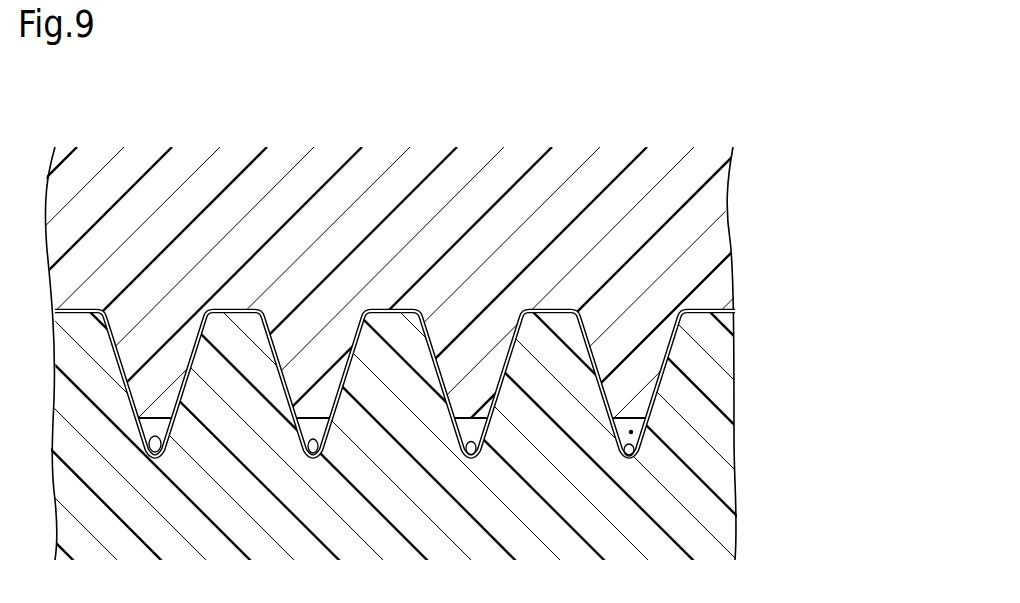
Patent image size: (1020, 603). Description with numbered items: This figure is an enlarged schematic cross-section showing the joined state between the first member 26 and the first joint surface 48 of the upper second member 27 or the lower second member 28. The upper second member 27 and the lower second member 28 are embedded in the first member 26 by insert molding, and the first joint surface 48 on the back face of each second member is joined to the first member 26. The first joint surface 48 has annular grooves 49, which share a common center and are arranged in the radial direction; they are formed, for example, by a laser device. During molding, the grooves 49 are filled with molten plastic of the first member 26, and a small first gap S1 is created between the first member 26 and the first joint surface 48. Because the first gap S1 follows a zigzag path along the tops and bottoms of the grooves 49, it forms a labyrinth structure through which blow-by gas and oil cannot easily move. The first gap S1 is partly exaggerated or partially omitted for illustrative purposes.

The first member 26 is at (730, 222).
The upper second member 27 is at (481, 432).
The lower second member 28 is at (738, 444).
The first joint surface 48 is at (705, 308).
The annular grooves 49 is at (152, 459).
The first gap S1 is at (631, 432).